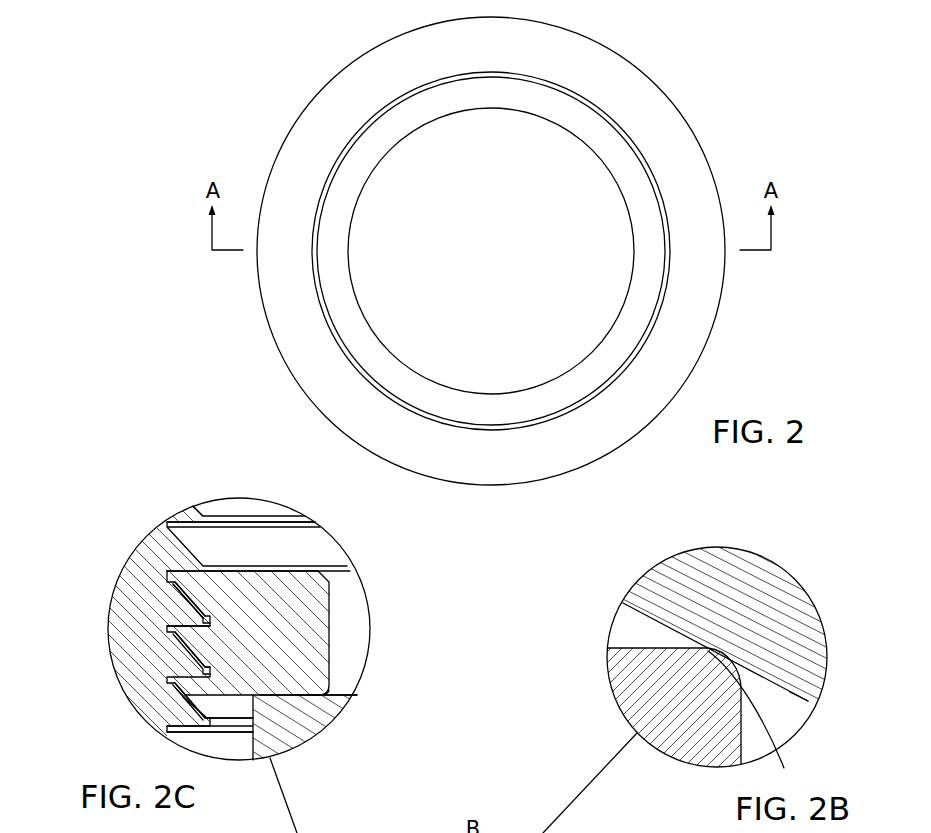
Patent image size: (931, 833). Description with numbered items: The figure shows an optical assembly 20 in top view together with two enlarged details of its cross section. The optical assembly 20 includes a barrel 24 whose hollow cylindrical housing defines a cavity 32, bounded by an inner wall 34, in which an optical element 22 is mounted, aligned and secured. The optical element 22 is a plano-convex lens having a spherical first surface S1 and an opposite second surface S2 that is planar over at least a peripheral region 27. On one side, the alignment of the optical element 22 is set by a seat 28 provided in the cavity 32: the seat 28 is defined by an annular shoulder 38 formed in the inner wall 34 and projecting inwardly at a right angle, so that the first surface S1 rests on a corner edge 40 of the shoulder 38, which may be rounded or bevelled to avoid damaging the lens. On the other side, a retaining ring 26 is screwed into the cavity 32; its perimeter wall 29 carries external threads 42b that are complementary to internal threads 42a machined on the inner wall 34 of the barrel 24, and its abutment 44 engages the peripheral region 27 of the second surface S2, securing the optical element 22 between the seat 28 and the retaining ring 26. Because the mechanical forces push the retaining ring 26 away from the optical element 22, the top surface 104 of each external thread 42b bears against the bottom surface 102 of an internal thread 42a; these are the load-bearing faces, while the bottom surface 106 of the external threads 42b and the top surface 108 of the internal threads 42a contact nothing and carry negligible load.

In FIG. 2, the optical assembly 20 is at (474, 251).
In FIG. 2B, the optical assembly 20 is at (607, 783).
In FIG. 2, the barrel 24 is at (302, 392).
In FIG. 2C, the barrel 24 is at (120, 640).
In FIG. 2, the cavity 32 is at (478, 262).
In FIG. 2C, the inner wall 34 is at (176, 502).
In FIG. 2C, the bottom surface 102 is at (176, 578).
In FIG. 2C, the top surface 104 is at (182, 593).
In FIG. 2C, the bottom surface 106 is at (196, 598).
In FIG. 2C, the top surface 108 is at (190, 607).
In FIG. 2C, the internal threads 42a is at (177, 660).
In FIG. 2C, the external threads 42b is at (190, 683).
In FIG. 2C, the retaining ring 26 is at (315, 593).
In FIG. 2C, the abutment 44 is at (293, 690).
In FIG. 2C, the second surface S2 is at (343, 695).
In FIG. 2C, the peripheral region 27 is at (305, 700).
In FIG. 2C, the perimeter wall 29 is at (227, 708).
In FIG. 2C, the optical element 22 is at (289, 733).
In FIG. 2B, the seat 28 is at (629, 632).
In FIG. 2B, the annular shoulder 38 is at (625, 663).
In FIG. 2B, the corner edge 40 is at (754, 720).
In FIG. 2B, the first surface S1 is at (810, 699).